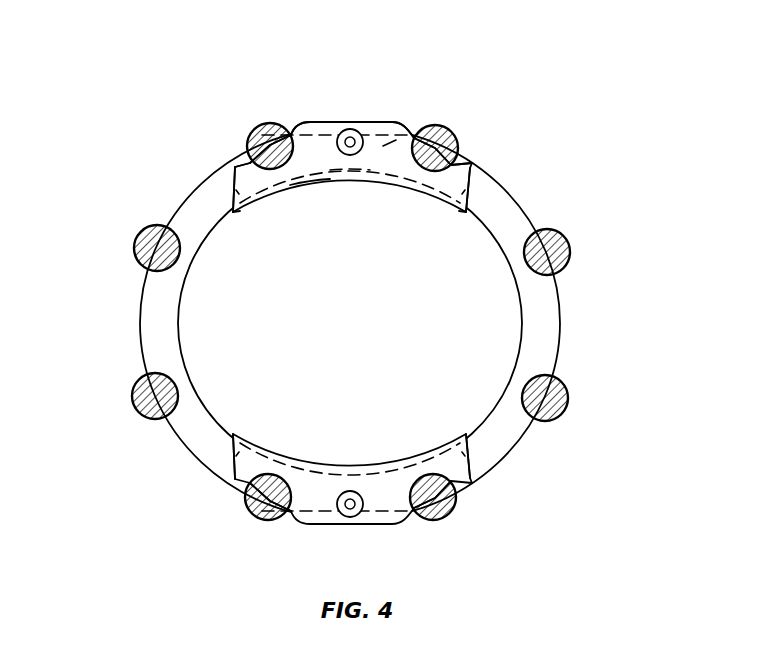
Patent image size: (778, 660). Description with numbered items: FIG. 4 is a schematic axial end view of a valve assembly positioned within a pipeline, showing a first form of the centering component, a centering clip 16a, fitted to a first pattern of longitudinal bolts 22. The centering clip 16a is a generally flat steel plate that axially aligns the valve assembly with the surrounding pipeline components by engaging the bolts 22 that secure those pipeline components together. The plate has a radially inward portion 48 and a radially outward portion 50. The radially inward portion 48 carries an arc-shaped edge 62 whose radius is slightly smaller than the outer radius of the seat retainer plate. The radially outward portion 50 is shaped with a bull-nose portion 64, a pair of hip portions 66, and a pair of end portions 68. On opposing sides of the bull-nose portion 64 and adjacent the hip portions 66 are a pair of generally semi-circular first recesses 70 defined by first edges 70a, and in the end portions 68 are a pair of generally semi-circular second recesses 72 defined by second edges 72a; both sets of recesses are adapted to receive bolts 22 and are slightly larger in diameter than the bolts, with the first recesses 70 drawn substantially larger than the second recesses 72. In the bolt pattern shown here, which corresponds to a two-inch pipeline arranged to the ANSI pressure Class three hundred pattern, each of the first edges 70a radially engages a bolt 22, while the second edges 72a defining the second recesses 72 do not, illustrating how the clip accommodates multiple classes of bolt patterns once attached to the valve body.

The centering clip 16a is at (379, 108).
The bolts 22 is at (252, 133).
The radially inward portion 48 is at (355, 170).
The radially outward portion 50 is at (389, 142).
The arc-shaped edge 62 is at (308, 186).
The bull-nose portion 64 is at (346, 128).
The hip portions 66 is at (235, 167).
The end portions 68 is at (234, 213).
The first recesses 70 is at (288, 128).
The first edges 70a is at (256, 160).
The second recesses 72 is at (233, 197).
The second edges 72a is at (233, 193).